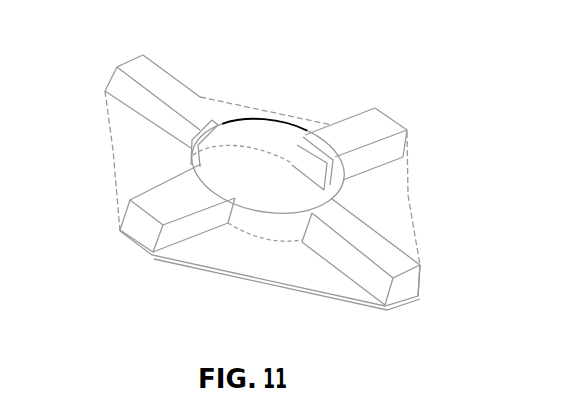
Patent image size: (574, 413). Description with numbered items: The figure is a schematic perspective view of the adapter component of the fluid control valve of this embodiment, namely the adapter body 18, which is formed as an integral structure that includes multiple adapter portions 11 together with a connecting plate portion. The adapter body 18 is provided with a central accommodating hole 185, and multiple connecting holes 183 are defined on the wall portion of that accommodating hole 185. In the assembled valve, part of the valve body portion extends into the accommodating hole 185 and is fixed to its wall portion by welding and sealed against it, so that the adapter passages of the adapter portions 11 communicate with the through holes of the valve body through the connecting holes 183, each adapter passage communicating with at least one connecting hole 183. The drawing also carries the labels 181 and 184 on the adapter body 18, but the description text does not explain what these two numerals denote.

The adapter portion 11 is at (168, 96).
The adapter body 18 is at (152, 170).
The plate side edge 181 is at (275, 113).
The connecting hole 183 is at (205, 136).
The reinforcing rib 184 is at (153, 233).
The accommodating hole 185 is at (266, 178).